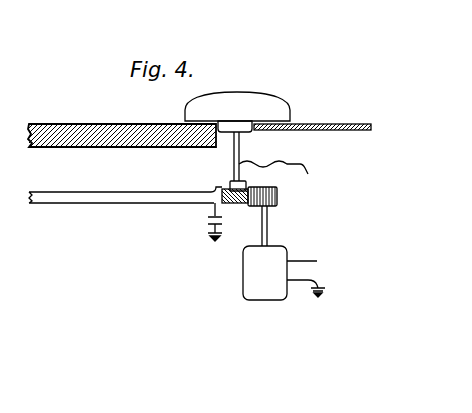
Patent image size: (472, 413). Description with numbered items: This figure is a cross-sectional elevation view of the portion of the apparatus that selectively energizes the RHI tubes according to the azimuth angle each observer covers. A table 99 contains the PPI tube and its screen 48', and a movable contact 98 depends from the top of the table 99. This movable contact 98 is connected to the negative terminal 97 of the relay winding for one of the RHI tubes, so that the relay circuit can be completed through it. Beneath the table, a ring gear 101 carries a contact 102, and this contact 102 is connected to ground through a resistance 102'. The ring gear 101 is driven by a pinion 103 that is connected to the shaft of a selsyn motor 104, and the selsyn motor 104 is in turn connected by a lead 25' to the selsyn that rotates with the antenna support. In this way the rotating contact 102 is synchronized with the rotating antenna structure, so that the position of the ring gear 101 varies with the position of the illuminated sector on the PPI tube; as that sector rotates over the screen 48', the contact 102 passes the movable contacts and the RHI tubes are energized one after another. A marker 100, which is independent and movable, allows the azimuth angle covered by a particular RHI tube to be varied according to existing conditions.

The screen 48' is at (124, 122).
The marker 100 is at (265, 104).
The table 99 is at (350, 131).
The movable contact 98 is at (240, 145).
The negative terminal 97 is at (277, 176).
The contact 102 is at (256, 181).
The ring gear 101 is at (228, 204).
The resistance 102' is at (196, 222).
The pinion 103 is at (278, 198).
The selsyn motor 104 is at (243, 276).
The lead 25' is at (306, 265).